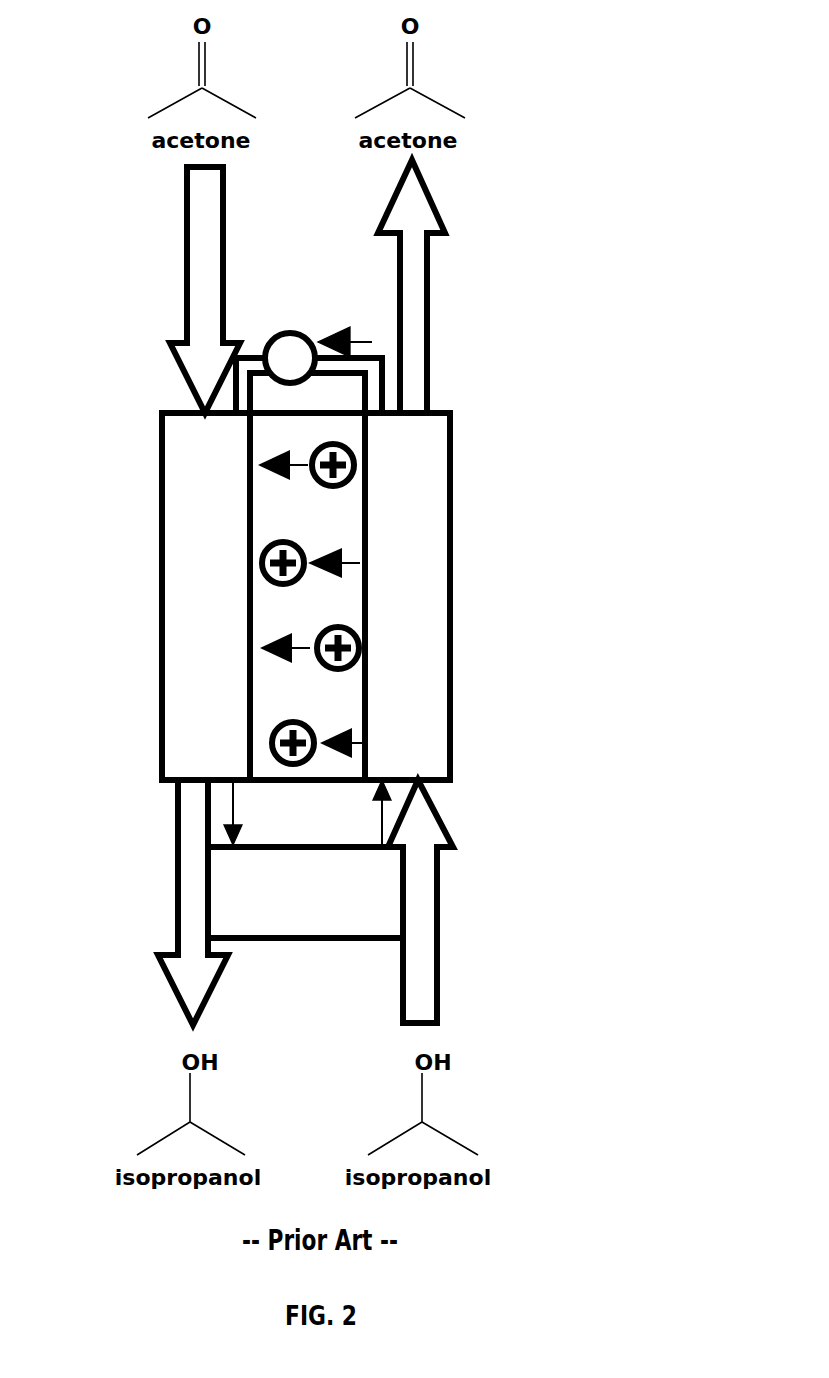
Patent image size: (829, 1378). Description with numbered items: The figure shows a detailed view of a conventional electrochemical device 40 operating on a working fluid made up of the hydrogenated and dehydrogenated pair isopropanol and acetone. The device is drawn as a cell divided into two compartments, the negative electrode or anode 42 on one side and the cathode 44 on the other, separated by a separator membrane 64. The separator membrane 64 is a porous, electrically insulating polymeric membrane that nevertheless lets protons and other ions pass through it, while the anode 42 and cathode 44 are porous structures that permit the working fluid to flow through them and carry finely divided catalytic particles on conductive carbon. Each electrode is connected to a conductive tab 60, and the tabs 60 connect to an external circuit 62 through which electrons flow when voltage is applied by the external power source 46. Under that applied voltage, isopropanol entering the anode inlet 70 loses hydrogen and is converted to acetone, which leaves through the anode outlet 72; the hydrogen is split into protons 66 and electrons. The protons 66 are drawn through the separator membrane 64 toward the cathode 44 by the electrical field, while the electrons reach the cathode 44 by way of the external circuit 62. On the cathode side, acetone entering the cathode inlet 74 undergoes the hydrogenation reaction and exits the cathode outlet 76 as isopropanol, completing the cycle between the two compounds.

The electrochemical device 40 is at (160, 413).
The anode 42 is at (393, 593).
The cathode 44 is at (198, 593).
The external power source 46 is at (288, 906).
The tab 60 is at (245, 416).
The external circuit 62 is at (246, 356).
The separator membrane 64 is at (324, 783).
The protons 66 is at (268, 738).
The anode inlet 70 is at (416, 777).
The anode outlet 72 is at (418, 416).
The cathode inlet 74 is at (203, 416).
The cathode outlet 76 is at (194, 777).